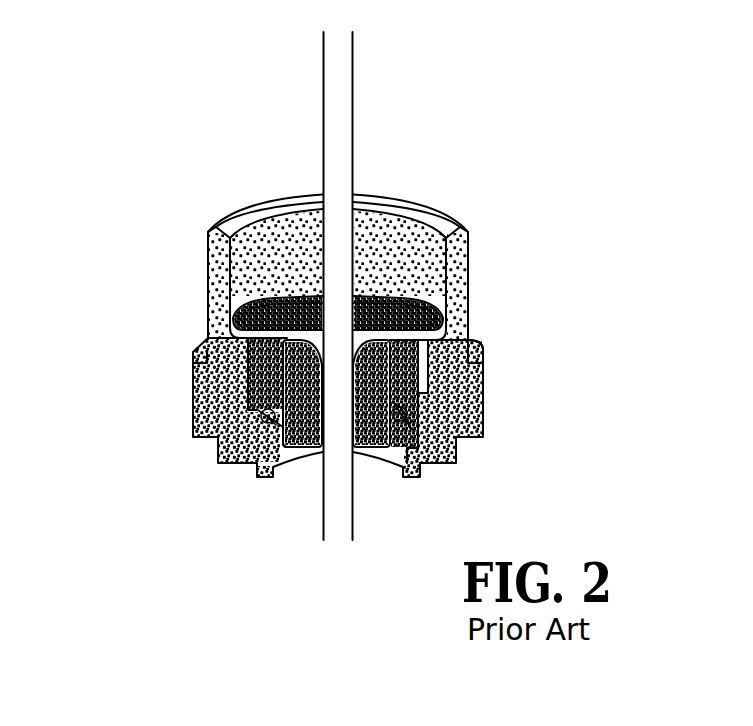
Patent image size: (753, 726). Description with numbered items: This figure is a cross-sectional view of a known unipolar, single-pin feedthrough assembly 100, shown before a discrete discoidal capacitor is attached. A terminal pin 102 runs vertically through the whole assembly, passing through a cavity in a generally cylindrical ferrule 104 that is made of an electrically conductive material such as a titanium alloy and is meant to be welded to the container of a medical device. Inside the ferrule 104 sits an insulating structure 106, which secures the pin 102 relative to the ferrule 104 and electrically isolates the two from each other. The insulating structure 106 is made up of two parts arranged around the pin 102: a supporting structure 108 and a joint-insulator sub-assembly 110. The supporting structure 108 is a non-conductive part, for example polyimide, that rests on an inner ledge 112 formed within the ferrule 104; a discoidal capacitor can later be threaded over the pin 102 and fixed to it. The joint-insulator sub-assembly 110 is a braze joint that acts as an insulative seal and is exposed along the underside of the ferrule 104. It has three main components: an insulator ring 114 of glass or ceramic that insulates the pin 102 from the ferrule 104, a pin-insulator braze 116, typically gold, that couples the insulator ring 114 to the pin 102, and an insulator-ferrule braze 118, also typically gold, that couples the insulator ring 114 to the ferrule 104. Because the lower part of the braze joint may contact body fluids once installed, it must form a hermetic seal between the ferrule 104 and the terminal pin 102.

The feedthrough assembly 100 is at (520, 230).
The terminal pin 102 is at (347, 68).
The ferrule 104 is at (465, 288).
The insulating structure 106 is at (222, 356).
The supporting structure 108 is at (443, 317).
The joint-insulator sub-assembly 110 is at (420, 394).
The inner ledge 112 is at (485, 345).
The insulator ring 114 is at (290, 437).
The pin-insulator braze 116 is at (287, 360).
The insulator-ferrule braze 118 is at (288, 405).